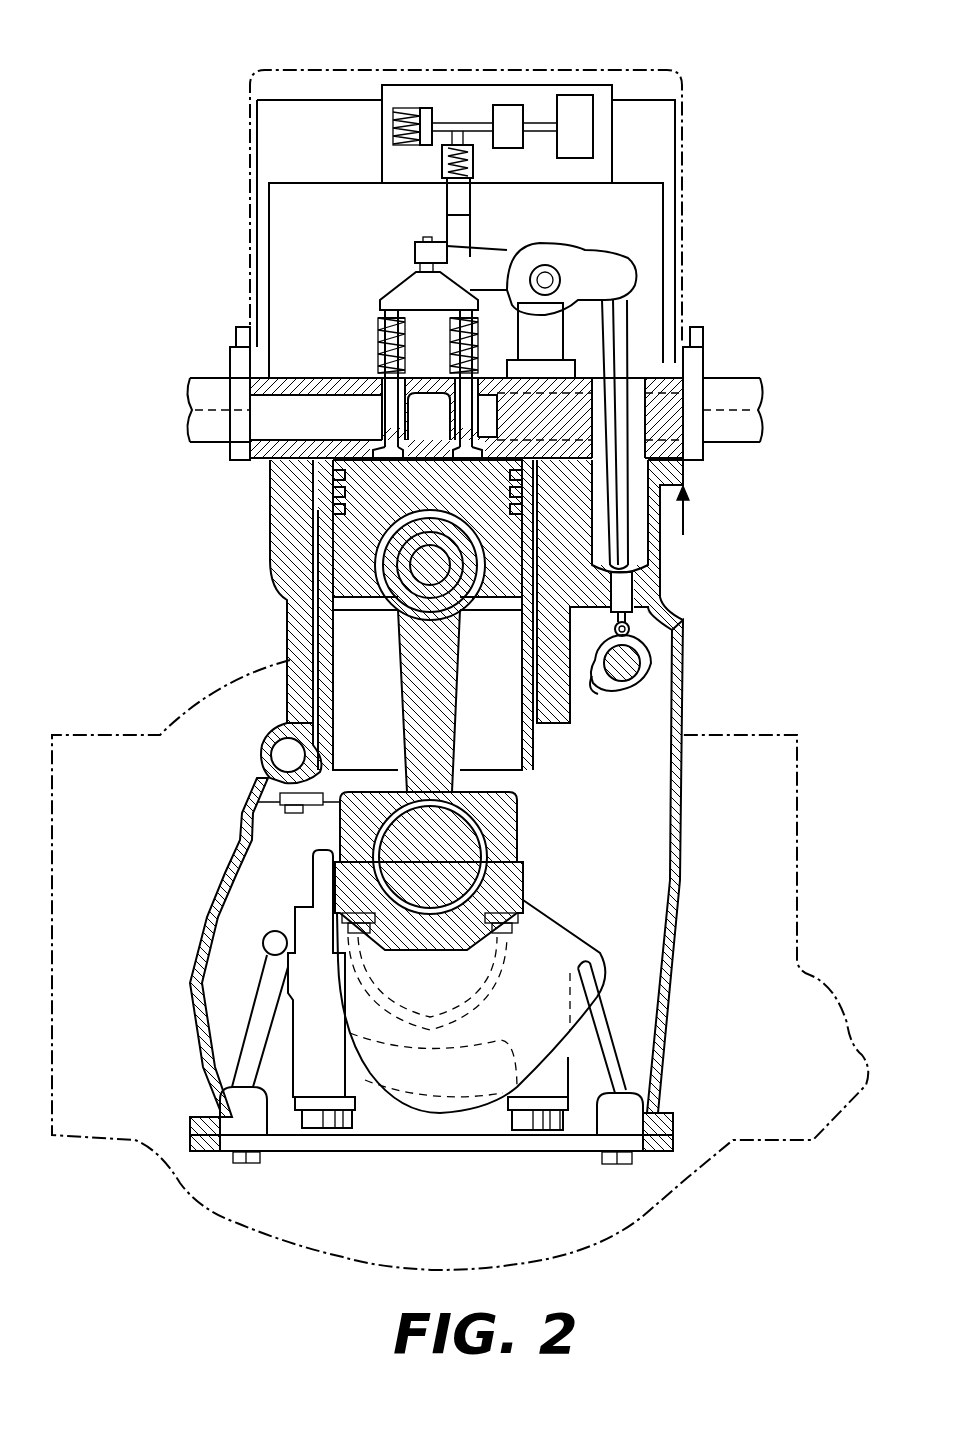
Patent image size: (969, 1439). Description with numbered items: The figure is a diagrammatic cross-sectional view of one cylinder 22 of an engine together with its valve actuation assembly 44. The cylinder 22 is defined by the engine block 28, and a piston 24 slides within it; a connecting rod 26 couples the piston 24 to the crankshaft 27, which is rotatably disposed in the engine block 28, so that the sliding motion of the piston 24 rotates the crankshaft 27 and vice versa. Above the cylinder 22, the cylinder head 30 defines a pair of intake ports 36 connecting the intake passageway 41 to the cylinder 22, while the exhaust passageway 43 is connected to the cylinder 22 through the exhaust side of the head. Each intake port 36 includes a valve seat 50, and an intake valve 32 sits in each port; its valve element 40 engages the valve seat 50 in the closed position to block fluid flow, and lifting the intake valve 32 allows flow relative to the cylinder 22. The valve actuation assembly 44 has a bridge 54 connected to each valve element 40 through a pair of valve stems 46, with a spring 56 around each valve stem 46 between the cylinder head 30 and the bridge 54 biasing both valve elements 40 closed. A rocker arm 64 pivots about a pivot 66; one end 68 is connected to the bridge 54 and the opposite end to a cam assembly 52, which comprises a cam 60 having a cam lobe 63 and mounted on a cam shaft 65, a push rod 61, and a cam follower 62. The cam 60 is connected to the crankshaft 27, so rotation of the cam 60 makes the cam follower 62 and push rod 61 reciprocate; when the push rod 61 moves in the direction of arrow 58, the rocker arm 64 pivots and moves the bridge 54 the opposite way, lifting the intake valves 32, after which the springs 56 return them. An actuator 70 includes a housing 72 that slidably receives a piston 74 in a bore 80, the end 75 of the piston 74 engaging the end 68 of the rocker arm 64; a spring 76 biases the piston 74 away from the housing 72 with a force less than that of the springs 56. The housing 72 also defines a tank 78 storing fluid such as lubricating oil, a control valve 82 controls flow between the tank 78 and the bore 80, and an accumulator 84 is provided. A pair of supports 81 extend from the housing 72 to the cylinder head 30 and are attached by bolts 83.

The cylinder 22 is at (347, 650).
The piston 24 is at (333, 580).
The connecting rod 26 is at (462, 778).
The crankshaft 27 is at (600, 970).
The engine block 28 is at (275, 735).
The cylinder head 30 is at (693, 460).
The intake valve 32 is at (385, 392).
The intake port 36 is at (390, 440).
The valve element 40 is at (456, 442).
The intake passageway 41 is at (256, 410).
The exhaust passageway 43 is at (746, 410).
The valve actuation assembly 44 is at (722, 118).
The valve stem 46 is at (378, 352).
The valve seat 50 is at (336, 500).
The cam assembly 52 is at (780, 560).
The bridge 54 is at (395, 300).
The spring 56 is at (382, 318).
The arrow 58 is at (683, 520).
The cam 60 is at (603, 695).
The push rod 61 is at (625, 556).
The cam follower 62 is at (632, 633).
The cam lobe 63 is at (592, 682).
The rocker arm 64 is at (603, 266).
The cam shaft 65 is at (630, 680).
The pivot 66 is at (560, 270).
The end of rocker arm 68 is at (415, 250).
The actuator 70 is at (366, 95).
The housing 72 is at (393, 138).
The piston 74 is at (447, 196).
The end of piston 75 is at (470, 212).
The spring 76 is at (473, 160).
The tank 78 is at (576, 95).
The bore 80 is at (442, 162).
The support 81 is at (262, 240).
The control valve 82 is at (508, 105).
The bolt 83 is at (236, 332).
The accumulator 84 is at (393, 118).